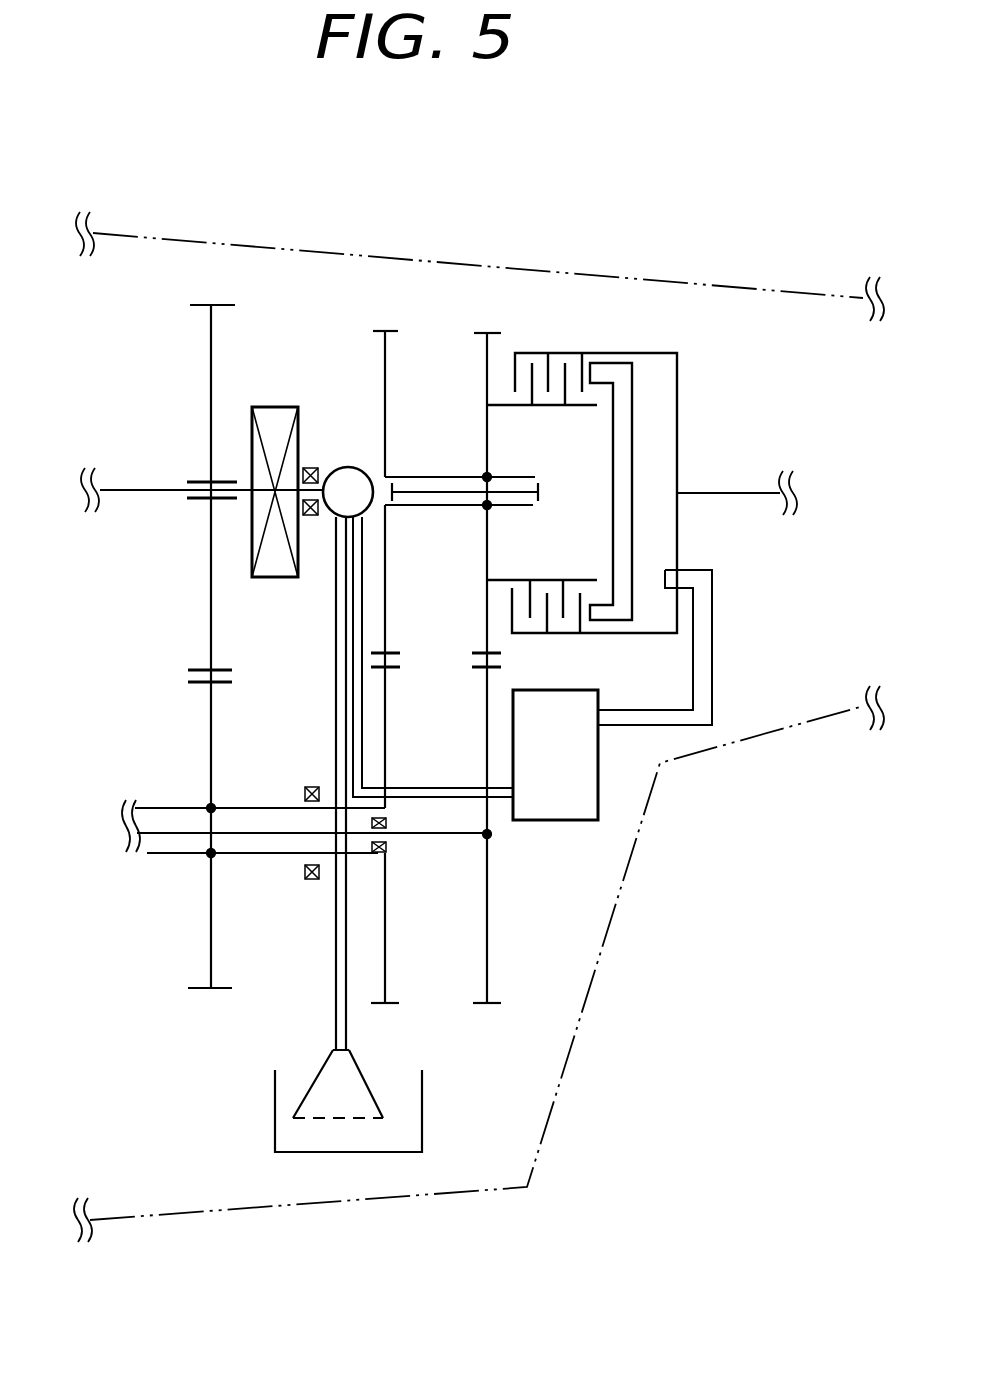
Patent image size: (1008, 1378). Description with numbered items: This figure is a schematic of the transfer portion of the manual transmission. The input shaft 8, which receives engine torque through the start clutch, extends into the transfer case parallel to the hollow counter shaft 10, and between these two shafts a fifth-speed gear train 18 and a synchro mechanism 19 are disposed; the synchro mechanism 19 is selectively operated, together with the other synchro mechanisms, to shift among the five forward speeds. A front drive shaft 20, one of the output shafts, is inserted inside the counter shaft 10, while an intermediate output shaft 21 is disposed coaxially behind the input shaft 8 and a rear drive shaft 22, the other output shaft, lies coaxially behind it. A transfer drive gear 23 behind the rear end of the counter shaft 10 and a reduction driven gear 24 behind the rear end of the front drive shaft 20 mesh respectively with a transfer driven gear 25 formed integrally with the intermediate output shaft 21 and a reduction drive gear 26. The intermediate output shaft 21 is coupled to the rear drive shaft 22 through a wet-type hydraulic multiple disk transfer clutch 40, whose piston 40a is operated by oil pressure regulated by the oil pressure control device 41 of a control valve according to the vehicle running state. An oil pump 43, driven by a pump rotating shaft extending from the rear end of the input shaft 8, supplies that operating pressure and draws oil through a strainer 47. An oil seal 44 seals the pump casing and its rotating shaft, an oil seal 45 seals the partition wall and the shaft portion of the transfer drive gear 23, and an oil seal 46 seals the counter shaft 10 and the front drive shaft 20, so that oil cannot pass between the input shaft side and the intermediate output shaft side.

The input shaft 8 is at (140, 490).
The counter shaft 10 is at (178, 853).
The fifth-speed gear train 18 is at (213, 295).
The synchro mechanism 19 is at (272, 395).
The front drive shaft 20 is at (258, 833).
The intermediate output shaft 21 is at (430, 476).
The rear drive shaft 22 is at (733, 493).
The transfer drive gear 23 is at (386, 1008).
The reduction driven gear 24 is at (488, 1008).
The transfer driven gear 25 is at (386, 331).
The reduction drive gear 26 is at (488, 333).
The transfer clutch 40 is at (702, 360).
The piston 40a is at (622, 540).
The oil pressure control device 41 is at (570, 820).
The oil pump 43 is at (354, 455).
The oil seal 44 is at (310, 468).
The oil seal 45 is at (311, 880).
The oil seal 46 is at (388, 853).
The strainer 47 is at (342, 1152).